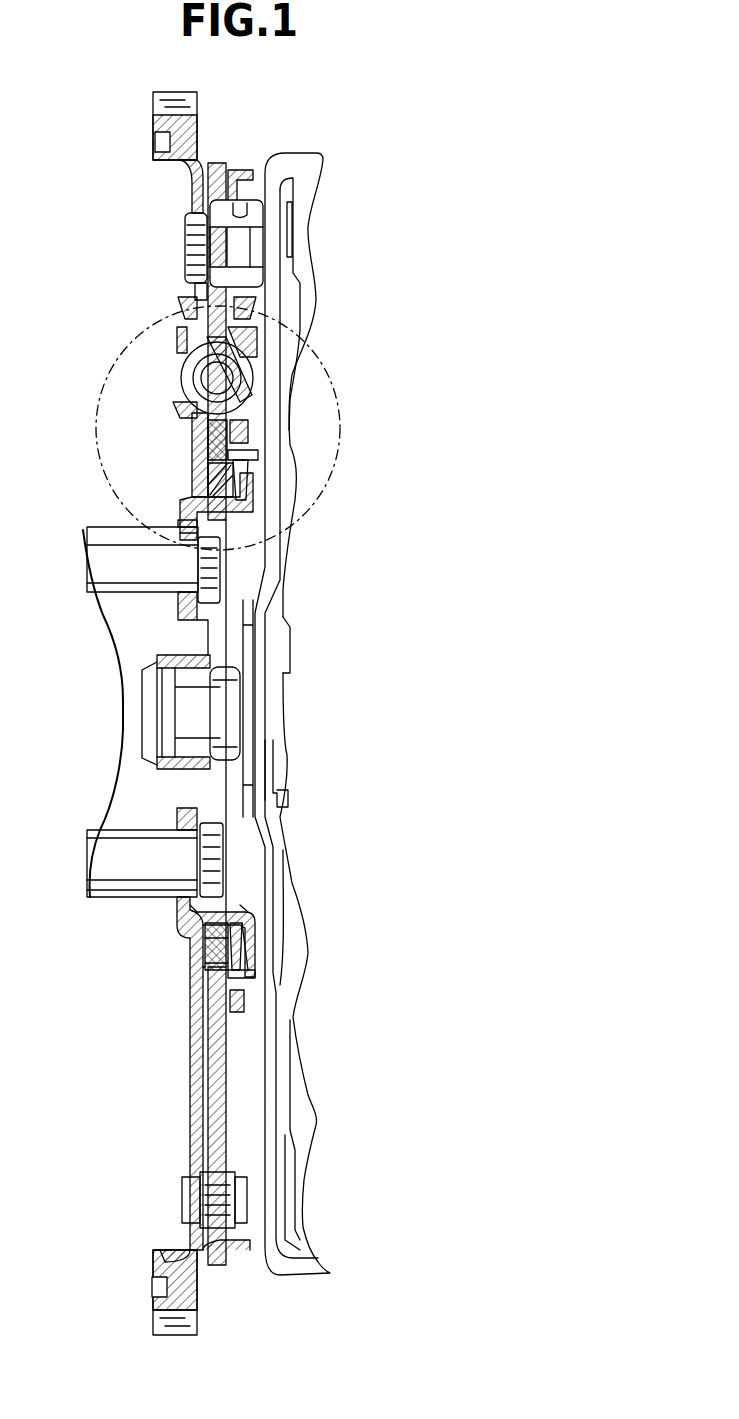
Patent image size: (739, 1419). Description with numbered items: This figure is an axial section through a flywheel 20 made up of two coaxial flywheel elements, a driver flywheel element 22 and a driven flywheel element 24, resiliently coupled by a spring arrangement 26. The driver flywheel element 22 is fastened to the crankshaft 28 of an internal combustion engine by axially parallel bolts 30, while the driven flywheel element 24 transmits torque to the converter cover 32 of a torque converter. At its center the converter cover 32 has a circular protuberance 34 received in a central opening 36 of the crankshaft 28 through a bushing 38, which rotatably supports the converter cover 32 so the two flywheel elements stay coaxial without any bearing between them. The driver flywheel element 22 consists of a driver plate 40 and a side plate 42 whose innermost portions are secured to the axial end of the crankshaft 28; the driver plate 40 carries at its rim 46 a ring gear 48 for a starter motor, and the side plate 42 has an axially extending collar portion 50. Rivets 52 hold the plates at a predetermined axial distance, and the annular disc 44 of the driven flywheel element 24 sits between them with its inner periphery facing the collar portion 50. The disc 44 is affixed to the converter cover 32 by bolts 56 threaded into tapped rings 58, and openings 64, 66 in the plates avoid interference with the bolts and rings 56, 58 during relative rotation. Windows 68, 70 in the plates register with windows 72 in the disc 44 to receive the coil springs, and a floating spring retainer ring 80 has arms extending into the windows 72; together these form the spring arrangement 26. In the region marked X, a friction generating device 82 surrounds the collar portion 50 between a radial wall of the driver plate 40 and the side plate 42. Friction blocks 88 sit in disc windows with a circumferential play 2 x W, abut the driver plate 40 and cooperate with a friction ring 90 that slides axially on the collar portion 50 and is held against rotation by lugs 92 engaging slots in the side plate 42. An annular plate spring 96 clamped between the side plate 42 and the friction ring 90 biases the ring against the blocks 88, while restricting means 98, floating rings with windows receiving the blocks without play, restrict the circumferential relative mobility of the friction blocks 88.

The flywheel assembly 2 is at (377, 585).
The flywheel 20 is at (362, 208).
The driver flywheel element 22 is at (228, 1108).
The driven flywheel element 24 is at (212, 1063).
The spring arrangement 26 is at (187, 372).
The crankshaft 28 is at (130, 633).
The bolts 30 is at (218, 575).
The converter cover 32 is at (320, 153).
The circular protuberance 34 is at (233, 680).
The central opening 36 is at (160, 740).
The bushing 38 is at (150, 665).
The driver plate 40 is at (197, 428).
The side plate 42 is at (257, 1012).
The annular disc 44 is at (207, 1030).
The rim 46 is at (165, 1259).
The ring gear 48 is at (165, 108).
The collar portion 50 is at (235, 905).
The rivets 52 is at (245, 1187).
The bolts 56 is at (187, 244).
The tapped rings 58 is at (255, 277).
The opening 64 is at (195, 208).
The opening 66 is at (243, 205).
The window 68 is at (180, 345).
The window 70 is at (258, 348).
The windows 72 is at (187, 315).
The spring retainer ring 80 is at (250, 378).
The friction generating device 82 is at (208, 953).
The friction blocks 88 is at (200, 478).
The friction ring 90 is at (268, 955).
The lugs 92 is at (265, 975).
The annular plate spring 96 is at (253, 940).
The restricting means 98 is at (233, 470).
The detail region X is at (310, 495).